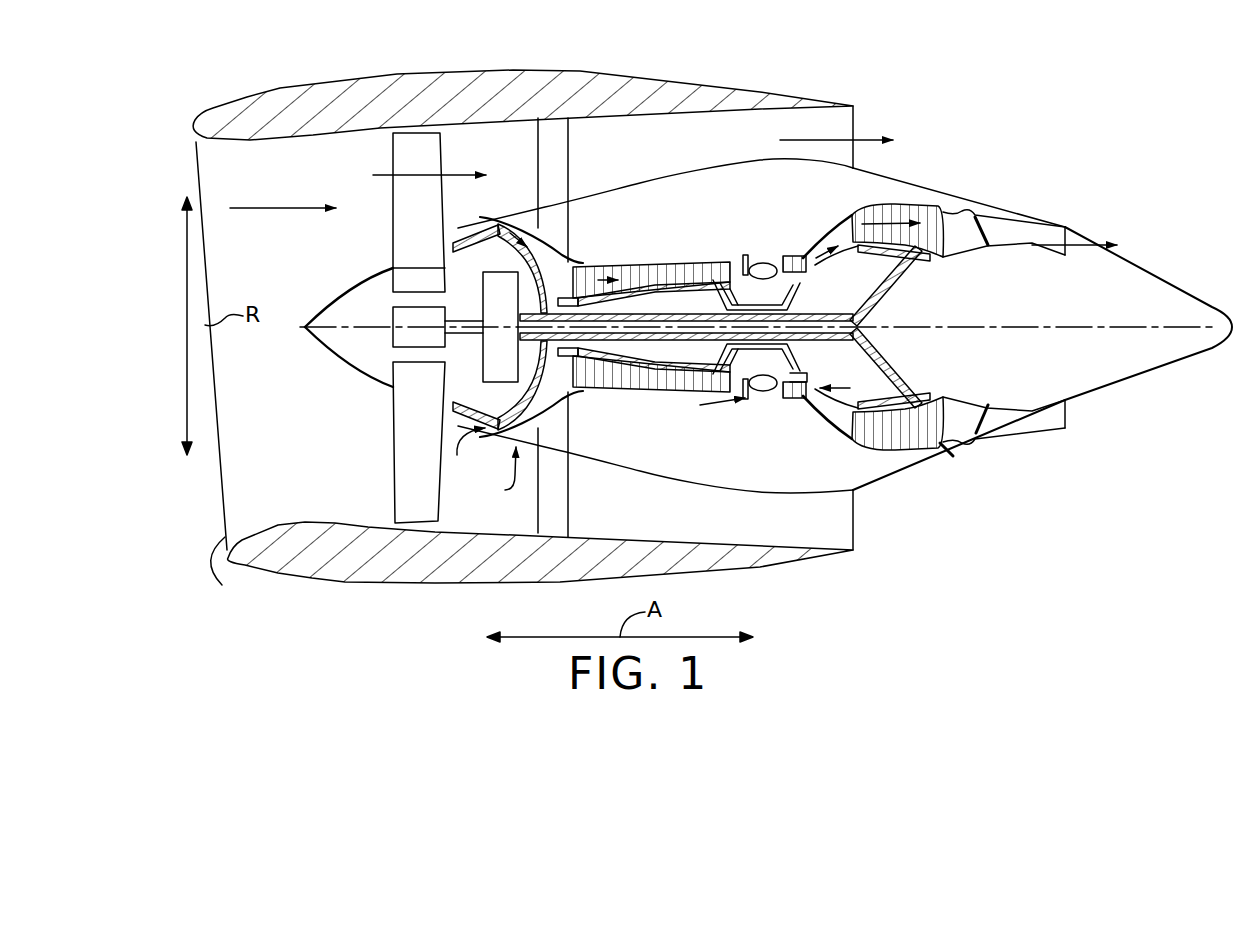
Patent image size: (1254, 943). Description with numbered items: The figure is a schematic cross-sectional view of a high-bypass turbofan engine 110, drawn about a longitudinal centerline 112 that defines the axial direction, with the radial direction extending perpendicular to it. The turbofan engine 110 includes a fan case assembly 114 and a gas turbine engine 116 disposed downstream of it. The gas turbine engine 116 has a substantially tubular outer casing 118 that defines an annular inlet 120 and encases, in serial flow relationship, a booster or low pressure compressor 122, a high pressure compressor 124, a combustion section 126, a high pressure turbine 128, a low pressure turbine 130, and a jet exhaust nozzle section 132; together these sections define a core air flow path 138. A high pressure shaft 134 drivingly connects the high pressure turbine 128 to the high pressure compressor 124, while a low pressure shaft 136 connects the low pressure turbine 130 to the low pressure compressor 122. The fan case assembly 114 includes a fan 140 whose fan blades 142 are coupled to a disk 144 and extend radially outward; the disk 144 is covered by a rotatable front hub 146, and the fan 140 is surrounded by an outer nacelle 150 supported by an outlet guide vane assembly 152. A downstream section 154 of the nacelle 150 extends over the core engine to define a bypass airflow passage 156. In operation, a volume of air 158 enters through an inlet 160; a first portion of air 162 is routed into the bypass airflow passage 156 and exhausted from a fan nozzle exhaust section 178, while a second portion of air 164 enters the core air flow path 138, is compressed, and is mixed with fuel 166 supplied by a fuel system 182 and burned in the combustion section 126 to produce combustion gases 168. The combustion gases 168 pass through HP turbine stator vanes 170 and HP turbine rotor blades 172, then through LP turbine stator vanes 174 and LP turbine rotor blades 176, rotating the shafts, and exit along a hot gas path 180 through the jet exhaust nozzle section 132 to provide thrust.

The turbofan engine 110 is at (990, 100).
The longitudinal centerline 112 is at (1010, 327).
The fan case assembly 114 is at (314, 158).
The gas turbine engine 116 is at (688, 240).
The outer casing 118 is at (725, 483).
The annular inlet 120 is at (483, 452).
The low pressure compressor 122 is at (490, 473).
The high pressure compressor 124 is at (598, 388).
The combustion section 126 is at (757, 395).
The high pressure turbine 128 is at (848, 409).
The low pressure turbine 130 is at (940, 445).
The jet exhaust nozzle section 132 is at (985, 420).
The high pressure shaft 134 is at (765, 300).
The low pressure shaft 136 is at (884, 298).
The core air flow path 138 is at (563, 450).
The fan 140 is at (350, 370).
The fan blades 142 is at (392, 467).
The disk 144 is at (395, 282).
The front hub 146 is at (318, 343).
The outer nacelle 150 is at (434, 583).
The outlet guide vane assembly 152 is at (570, 157).
The downstream section 154 is at (760, 103).
The bypass airflow passage 156 is at (712, 153).
The volume of air 158 is at (278, 197).
The inlet 160 is at (237, 565).
The first portion of air 162 is at (408, 173).
The second portion of air 164 is at (460, 228).
The fuel 166 is at (745, 262).
The combustion gases 168 is at (805, 258).
The HP turbine stator vanes 170 is at (770, 393).
The HP turbine rotor blades 172 is at (797, 380).
The LP turbine stator vanes 174 is at (850, 437).
The LP turbine rotor blades 176 is at (865, 450).
The fan nozzle exhaust section 178 is at (853, 120).
The hot gas path 180 is at (838, 228).
The fuel system 182 is at (700, 405).